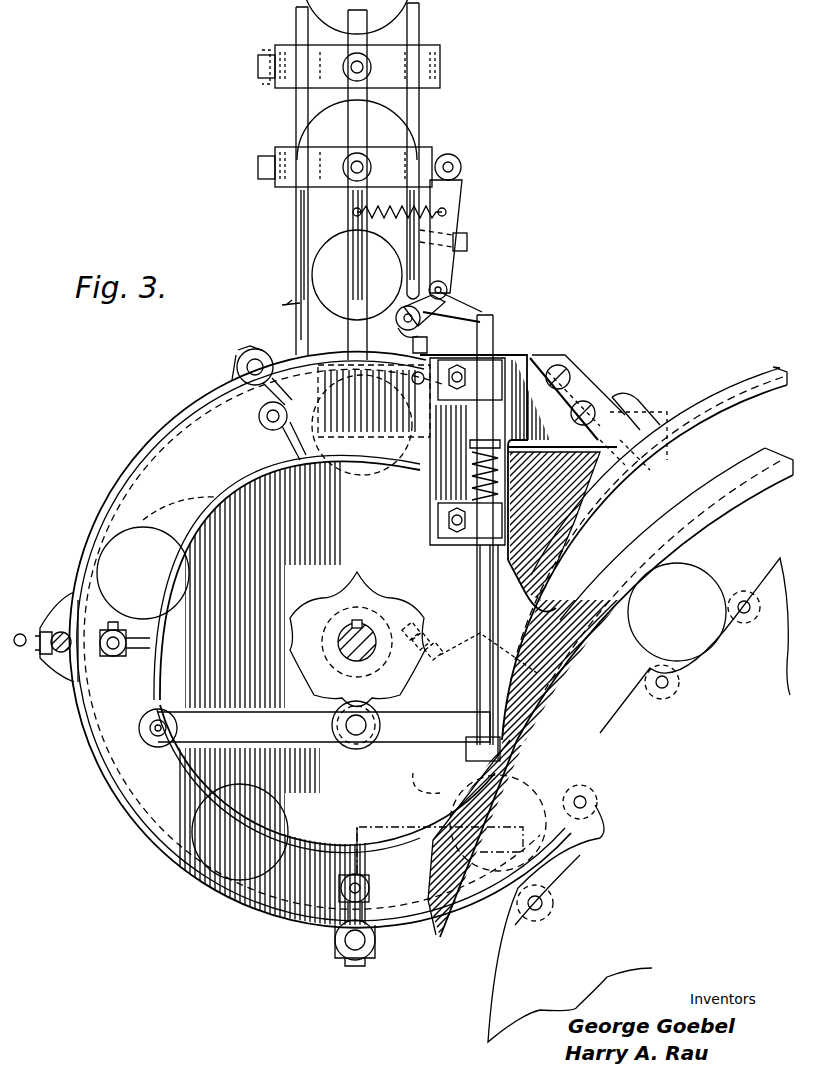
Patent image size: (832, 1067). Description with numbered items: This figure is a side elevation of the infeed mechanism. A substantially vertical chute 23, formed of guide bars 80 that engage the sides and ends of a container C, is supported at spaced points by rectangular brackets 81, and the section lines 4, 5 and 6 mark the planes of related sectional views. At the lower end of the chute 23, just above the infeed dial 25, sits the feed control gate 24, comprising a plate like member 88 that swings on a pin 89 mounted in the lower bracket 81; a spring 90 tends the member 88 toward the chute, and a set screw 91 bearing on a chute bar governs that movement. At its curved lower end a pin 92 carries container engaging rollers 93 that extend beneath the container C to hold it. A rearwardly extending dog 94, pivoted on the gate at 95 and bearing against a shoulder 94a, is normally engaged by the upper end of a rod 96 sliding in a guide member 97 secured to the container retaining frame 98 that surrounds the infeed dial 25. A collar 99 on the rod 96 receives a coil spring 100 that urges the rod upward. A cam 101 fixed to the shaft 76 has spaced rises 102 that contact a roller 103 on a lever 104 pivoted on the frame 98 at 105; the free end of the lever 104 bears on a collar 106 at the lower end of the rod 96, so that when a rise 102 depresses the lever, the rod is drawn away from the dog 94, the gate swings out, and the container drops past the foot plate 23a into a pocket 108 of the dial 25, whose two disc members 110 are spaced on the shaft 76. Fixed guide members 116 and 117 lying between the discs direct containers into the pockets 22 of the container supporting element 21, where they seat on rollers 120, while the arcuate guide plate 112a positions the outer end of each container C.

The section line 4- 4 is at (523, 750).
The section line 5- 5 is at (467, 135).
The section line 6- 6 is at (215, 643).
The container supporting element 21 is at (508, 958).
The pockets 22 is at (705, 668).
The chute 23 is at (296, 238).
The foot plate 23a is at (335, 412).
The feed control gate 24 is at (455, 222).
The infeed dial 25 is at (190, 697).
The shaft 76 is at (348, 634).
The guide bars 80 is at (300, 255).
The brackets 81 is at (286, 45).
The plate like member 88 is at (437, 262).
The pin 89 is at (462, 164).
The spring 90 is at (371, 185).
The set screw 91 is at (468, 236).
The pin 92 is at (397, 306).
The container engaging rollers 93 is at (396, 335).
The dog 94 is at (458, 312).
The shoulder 94a is at (441, 340).
The pivot 95 is at (447, 287).
The rod 96 is at (494, 318).
The guide member 97 is at (520, 367).
The container retaining frame 98 is at (500, 345).
The collar 99 is at (472, 430).
The coil spring 100 is at (505, 472).
The cam 101 is at (400, 600).
The rises 102 is at (432, 646).
The roller 103 is at (358, 750).
The lever 104 is at (296, 735).
The pivot 105 is at (153, 750).
The collar 106 is at (466, 749).
The pocket 108 is at (290, 460).
The disc members 110 is at (525, 600).
The arcuate guide plate 112a is at (708, 470).
The guide member 116 is at (575, 835).
The guide member 117 is at (423, 792).
The rollers 120 is at (650, 680).
The container C is at (718, 558).